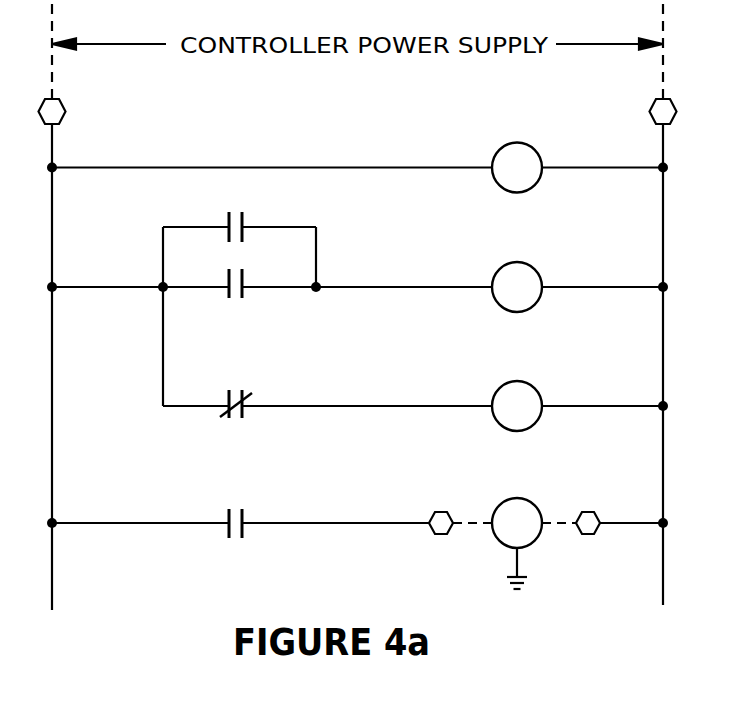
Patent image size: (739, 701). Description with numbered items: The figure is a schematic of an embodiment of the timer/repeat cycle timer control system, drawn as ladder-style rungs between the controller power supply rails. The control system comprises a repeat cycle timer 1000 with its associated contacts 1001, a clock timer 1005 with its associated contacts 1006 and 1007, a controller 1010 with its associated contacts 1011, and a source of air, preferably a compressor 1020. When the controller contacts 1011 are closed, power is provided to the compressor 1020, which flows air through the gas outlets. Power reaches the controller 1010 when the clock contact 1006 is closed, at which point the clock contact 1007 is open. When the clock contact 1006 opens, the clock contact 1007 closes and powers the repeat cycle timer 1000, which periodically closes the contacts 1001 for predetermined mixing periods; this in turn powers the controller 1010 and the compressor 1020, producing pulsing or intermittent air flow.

The repeat cycle timer contacts 1001 is at (242, 216).
The clock timer 1005 is at (530, 187).
The clock contact 1006 is at (244, 296).
The clock contact 1007 is at (246, 399).
The controller 1010 is at (504, 306).
The repeat cycle timer 1000 is at (530, 426).
The controller contacts 1011 is at (285, 493).
The compressor 1020 is at (530, 543).